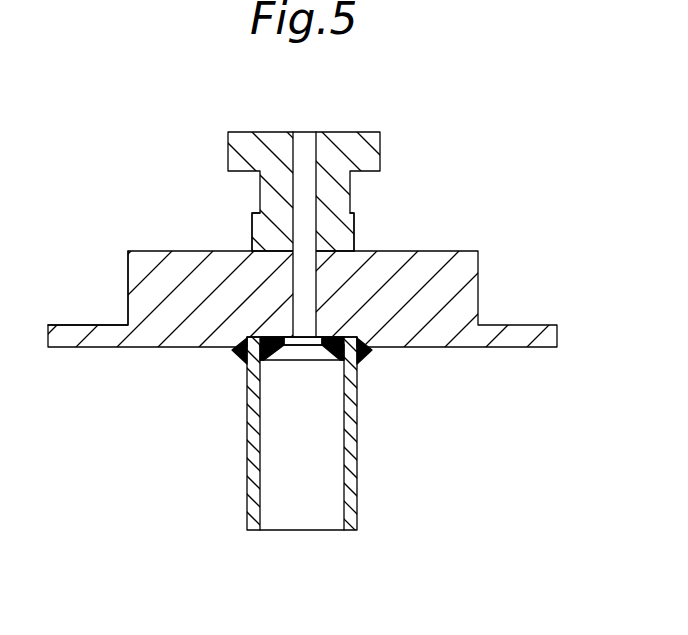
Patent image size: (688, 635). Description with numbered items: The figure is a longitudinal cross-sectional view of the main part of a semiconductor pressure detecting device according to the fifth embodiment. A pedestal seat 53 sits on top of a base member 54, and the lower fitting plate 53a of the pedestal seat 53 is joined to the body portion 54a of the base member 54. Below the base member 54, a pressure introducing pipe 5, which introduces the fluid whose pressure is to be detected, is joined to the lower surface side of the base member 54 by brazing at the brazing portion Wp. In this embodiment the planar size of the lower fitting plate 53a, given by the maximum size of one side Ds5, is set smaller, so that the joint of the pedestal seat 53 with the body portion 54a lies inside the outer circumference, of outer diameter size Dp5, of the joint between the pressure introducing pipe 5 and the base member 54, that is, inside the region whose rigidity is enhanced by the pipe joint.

The pressure introducing pipe 5 is at (357, 463).
The pedestal seat 53 is at (383, 140).
The lower fitting plate 53a is at (252, 230).
The base member 54 is at (470, 251).
The body portion 54a is at (128, 283).
The brazing portion Wp is at (238, 352).
The maximum size of one side Ds5 is at (200, 186).
The outer diameter size Dp5 is at (357, 535).